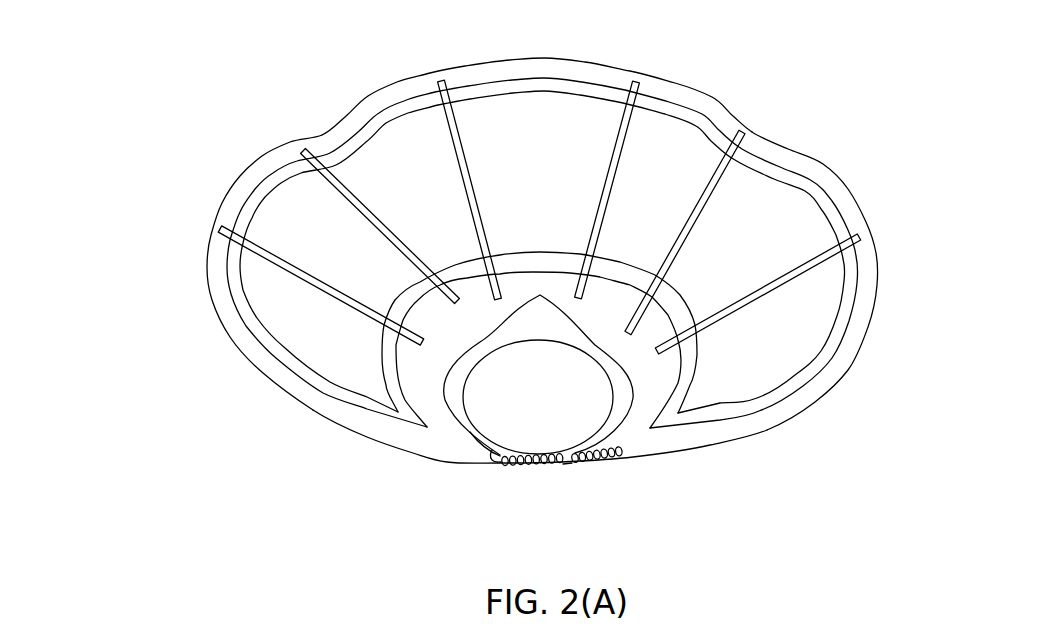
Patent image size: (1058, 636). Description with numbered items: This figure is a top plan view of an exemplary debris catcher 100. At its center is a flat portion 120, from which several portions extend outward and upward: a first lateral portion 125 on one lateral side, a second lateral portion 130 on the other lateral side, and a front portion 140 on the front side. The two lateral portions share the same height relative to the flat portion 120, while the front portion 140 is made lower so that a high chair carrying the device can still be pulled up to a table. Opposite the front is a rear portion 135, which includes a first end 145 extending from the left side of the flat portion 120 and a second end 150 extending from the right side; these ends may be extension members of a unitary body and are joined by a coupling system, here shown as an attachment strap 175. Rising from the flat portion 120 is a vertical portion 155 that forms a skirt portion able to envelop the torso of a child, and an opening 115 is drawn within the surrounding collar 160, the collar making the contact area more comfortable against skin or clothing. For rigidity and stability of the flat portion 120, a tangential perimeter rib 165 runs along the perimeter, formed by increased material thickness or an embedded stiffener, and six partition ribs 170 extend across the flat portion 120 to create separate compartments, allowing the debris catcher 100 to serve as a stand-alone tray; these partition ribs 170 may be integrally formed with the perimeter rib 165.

The debris catcher 100 is at (881, 61).
The opening 115 is at (481, 357).
The flat portion 120 is at (533, 217).
The first lateral portion 125 is at (840, 180).
The second lateral portion 130 is at (207, 263).
The rear portion 135 is at (443, 458).
The front portion 140 is at (541, 56).
The first end 145 is at (491, 463).
The second end 150 is at (512, 431).
The vertical portion 155 is at (440, 336).
The collar 160 is at (510, 305).
The perimeter rib 165 is at (256, 210).
The partition ribs 170 is at (318, 152).
The attachment strap 175 is at (581, 463).